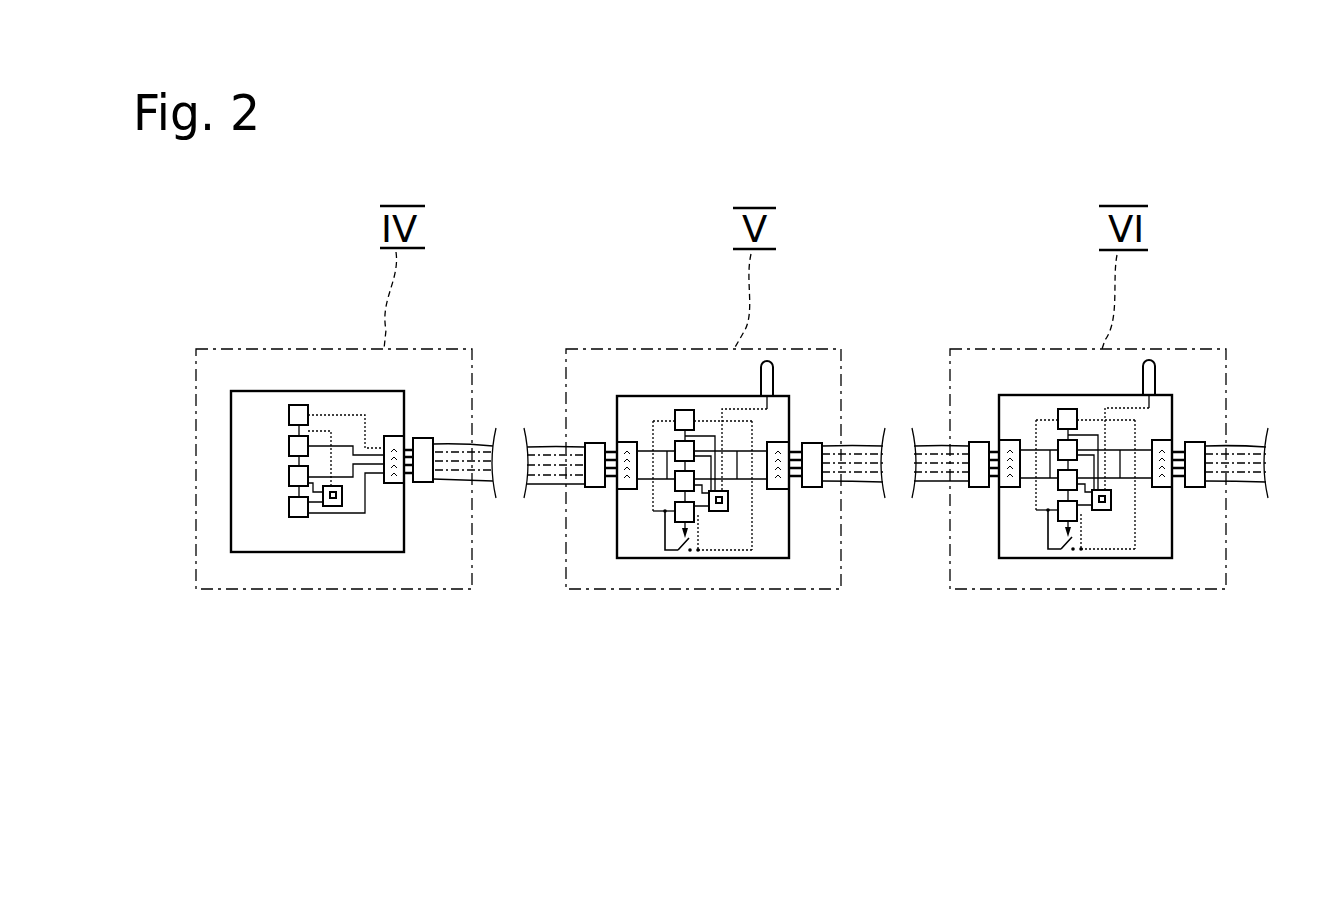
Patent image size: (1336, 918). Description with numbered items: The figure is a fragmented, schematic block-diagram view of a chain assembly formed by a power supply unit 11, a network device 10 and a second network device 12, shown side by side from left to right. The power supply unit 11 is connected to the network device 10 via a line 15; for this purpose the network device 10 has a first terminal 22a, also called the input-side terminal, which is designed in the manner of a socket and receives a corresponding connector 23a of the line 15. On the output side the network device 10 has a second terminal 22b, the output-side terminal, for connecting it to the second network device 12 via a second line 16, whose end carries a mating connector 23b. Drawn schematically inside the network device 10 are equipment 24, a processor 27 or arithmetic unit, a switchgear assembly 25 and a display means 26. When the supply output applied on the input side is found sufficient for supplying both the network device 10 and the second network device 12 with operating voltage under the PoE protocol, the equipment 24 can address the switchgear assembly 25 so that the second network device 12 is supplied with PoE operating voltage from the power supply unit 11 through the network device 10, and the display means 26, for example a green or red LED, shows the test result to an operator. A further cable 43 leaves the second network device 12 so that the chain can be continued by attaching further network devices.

The network device 10 is at (731, 445).
The power supply unit 11 is at (270, 326).
The second network device 12 is at (983, 322).
The line 15 is at (452, 455).
The second line 16 is at (862, 490).
The first terminal 22a is at (608, 510).
The second terminal 22b is at (800, 506).
The connector 23a is at (592, 443).
The second external connector 23b is at (860, 447).
The equipment 24 is at (716, 511).
The switchgear assembly 25 is at (688, 558).
The display means 26 is at (767, 372).
The processor 27 is at (730, 511).
The cable 43 is at (1238, 440).